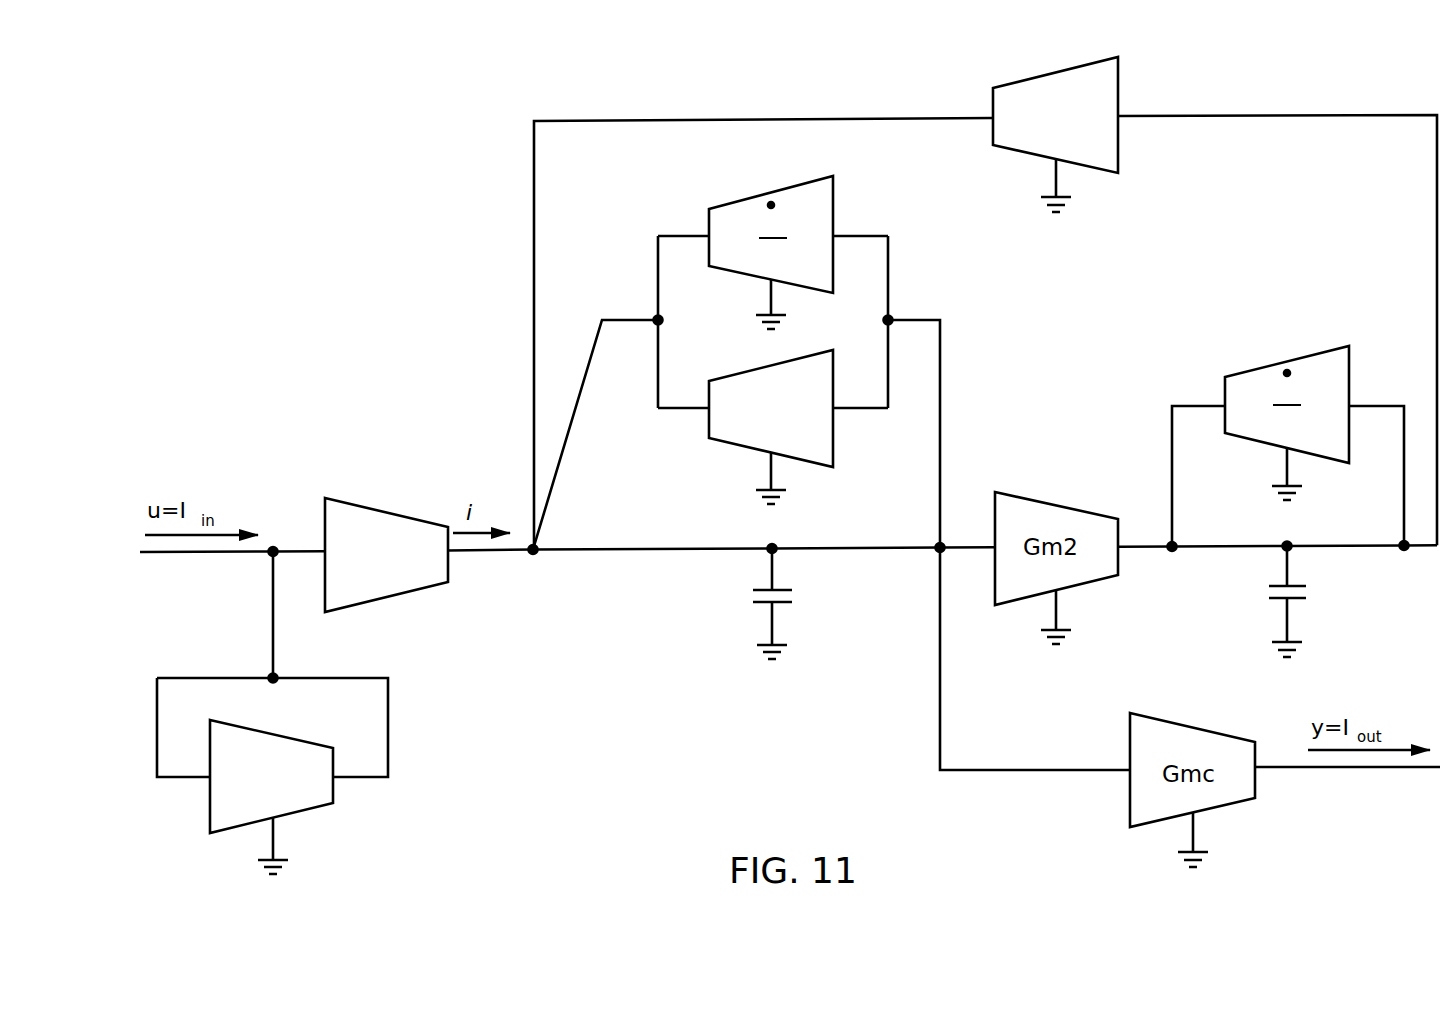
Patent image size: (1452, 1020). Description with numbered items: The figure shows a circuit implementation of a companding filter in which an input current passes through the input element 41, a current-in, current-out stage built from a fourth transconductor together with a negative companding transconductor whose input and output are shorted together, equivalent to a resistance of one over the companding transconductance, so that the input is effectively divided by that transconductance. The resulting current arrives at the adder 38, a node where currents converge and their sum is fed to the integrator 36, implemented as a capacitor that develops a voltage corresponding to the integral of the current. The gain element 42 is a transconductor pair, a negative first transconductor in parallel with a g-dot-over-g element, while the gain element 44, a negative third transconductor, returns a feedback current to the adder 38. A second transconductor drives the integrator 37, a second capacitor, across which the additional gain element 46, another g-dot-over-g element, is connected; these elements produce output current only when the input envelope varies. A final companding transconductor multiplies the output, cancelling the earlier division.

The integrator 36 is at (763, 607).
The integrator 37 is at (1277, 600).
The adder 38 is at (540, 553).
The input element 41 is at (343, 686).
The gain element 42 is at (840, 339).
The gain element 44 is at (1042, 88).
The additional gain element 46 is at (1303, 365).